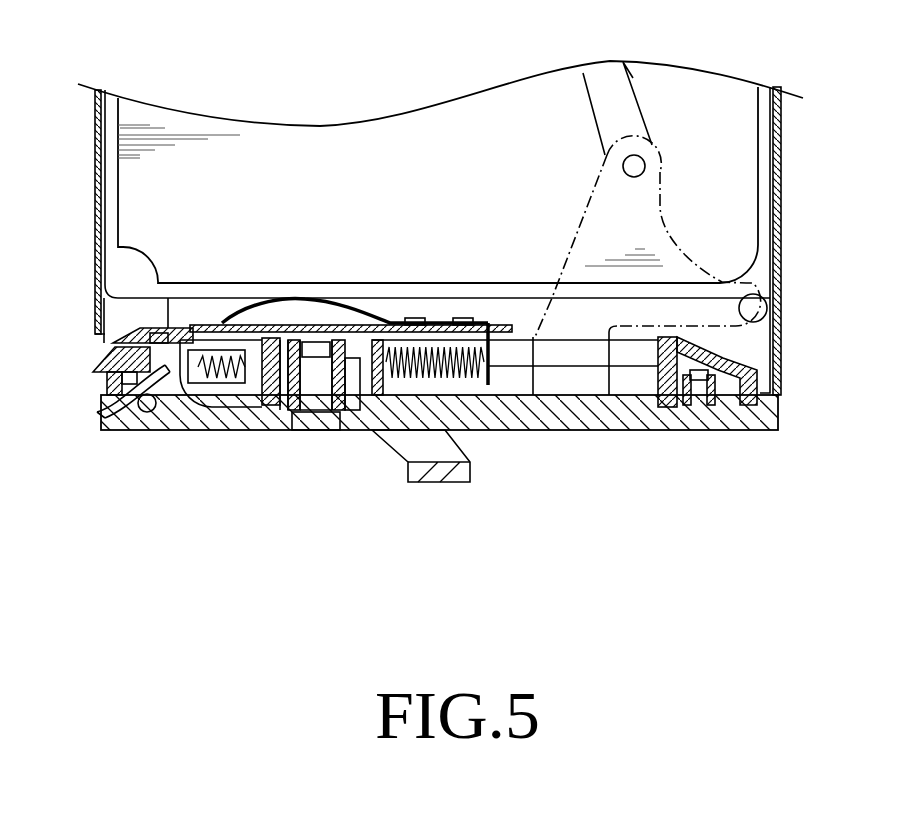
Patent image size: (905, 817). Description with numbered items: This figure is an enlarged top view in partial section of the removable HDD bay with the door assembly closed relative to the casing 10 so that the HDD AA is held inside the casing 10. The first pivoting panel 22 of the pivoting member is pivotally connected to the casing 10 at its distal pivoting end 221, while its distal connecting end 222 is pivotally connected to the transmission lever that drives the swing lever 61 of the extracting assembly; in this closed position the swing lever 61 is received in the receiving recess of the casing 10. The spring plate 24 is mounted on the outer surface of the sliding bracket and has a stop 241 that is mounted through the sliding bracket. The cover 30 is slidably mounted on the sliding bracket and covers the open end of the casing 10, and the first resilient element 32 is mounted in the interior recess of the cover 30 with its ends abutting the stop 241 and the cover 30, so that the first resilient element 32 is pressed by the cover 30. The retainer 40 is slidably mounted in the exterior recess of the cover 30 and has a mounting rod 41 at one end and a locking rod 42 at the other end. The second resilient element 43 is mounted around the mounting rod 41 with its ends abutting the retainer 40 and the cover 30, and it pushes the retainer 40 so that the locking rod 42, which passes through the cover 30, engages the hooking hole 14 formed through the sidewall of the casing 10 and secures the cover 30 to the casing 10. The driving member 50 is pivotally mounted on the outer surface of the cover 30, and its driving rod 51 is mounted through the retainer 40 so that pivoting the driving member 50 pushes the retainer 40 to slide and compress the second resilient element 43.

The casing 10 is at (100, 157).
The HDD AA is at (190, 142).
The swing lever 61 is at (640, 60).
The first pivoting panel 22 is at (583, 215).
The distal connecting end 222 is at (636, 165).
The distal pivoting end 221 is at (752, 309).
The spring plate 24 is at (340, 302).
The stop 241 is at (492, 343).
The first resilient element 32 is at (463, 373).
The second resilient element 43 is at (247, 352).
The retainer 40 is at (187, 340).
The hooking hole 14 is at (100, 338).
The locking rod 42 is at (108, 372).
The driving rod 51 is at (110, 405).
The mounting rod 41 is at (162, 333).
The driving member 50 is at (246, 432).
The cover 30 is at (662, 432).